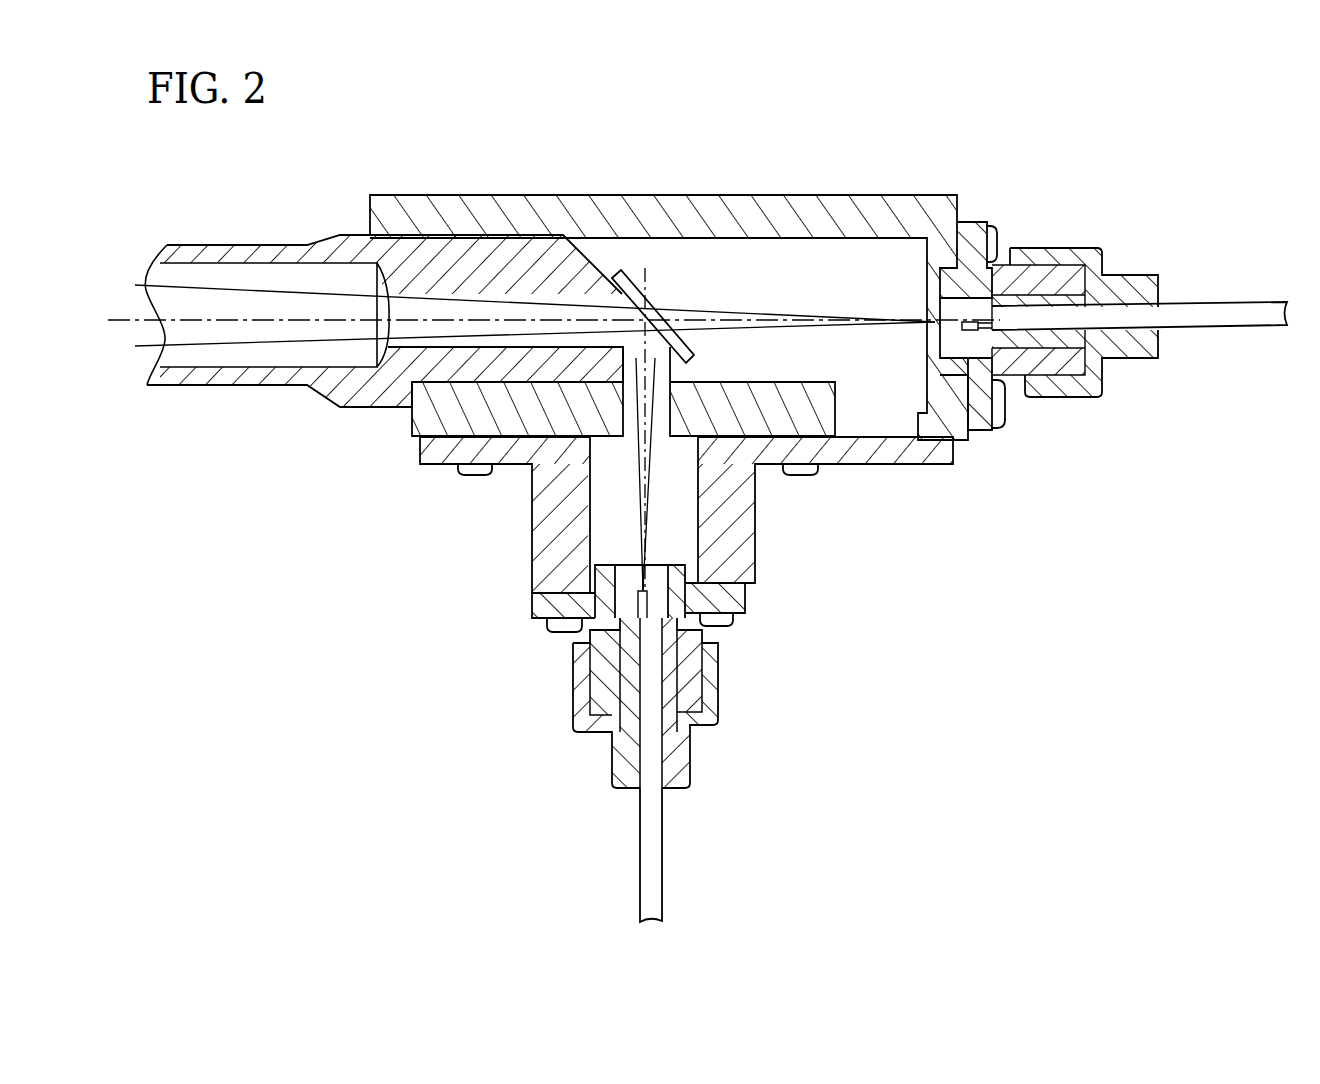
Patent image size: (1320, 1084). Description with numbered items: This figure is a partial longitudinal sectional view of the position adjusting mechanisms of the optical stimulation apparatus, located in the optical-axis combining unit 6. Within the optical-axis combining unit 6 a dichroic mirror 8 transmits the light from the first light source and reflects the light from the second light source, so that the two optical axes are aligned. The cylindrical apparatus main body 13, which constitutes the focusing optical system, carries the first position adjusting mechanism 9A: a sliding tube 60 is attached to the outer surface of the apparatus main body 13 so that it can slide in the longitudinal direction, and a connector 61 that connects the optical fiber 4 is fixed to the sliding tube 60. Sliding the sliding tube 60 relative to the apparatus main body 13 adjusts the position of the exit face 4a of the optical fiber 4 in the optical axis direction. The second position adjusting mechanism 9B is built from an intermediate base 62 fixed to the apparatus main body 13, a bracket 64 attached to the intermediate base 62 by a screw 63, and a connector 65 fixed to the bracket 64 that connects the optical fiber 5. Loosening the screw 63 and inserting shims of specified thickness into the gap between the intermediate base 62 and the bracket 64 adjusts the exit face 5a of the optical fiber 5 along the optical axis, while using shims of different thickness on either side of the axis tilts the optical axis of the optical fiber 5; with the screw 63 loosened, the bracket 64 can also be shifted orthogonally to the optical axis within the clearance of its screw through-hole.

The apparatus main body 13 is at (341, 247).
The sliding tube 60 is at (636, 208).
The dichroic mirror 8 is at (626, 279).
The optical-axis combining unit 6 is at (685, 266).
The position adjusting mechanism 9A is at (862, 181).
The connector 61 is at (1066, 247).
The optical fiber 4 is at (1222, 312).
The exit face 4a is at (960, 325).
The intermediate base 62 is at (828, 409).
The screw 63 is at (458, 474).
The bracket 64 is at (756, 537).
The position adjusting mechanism 9B is at (510, 503).
The exit face 5a is at (645, 592).
The connector 65 is at (722, 705).
The optical fiber 5 is at (661, 838).